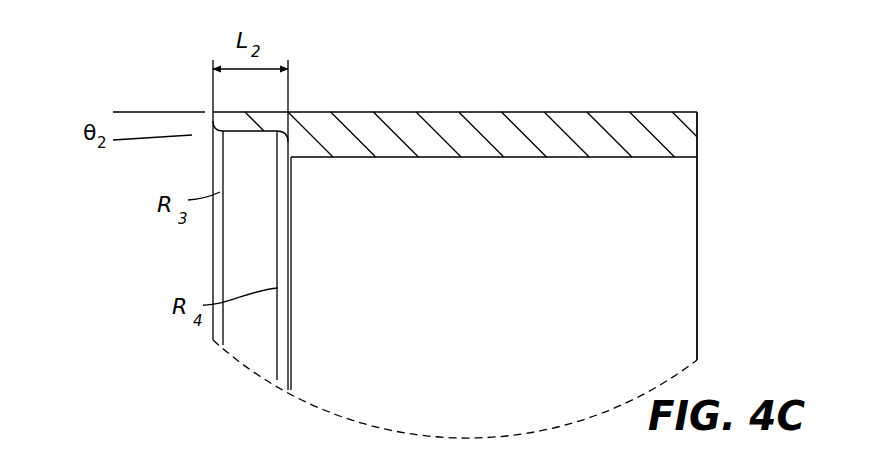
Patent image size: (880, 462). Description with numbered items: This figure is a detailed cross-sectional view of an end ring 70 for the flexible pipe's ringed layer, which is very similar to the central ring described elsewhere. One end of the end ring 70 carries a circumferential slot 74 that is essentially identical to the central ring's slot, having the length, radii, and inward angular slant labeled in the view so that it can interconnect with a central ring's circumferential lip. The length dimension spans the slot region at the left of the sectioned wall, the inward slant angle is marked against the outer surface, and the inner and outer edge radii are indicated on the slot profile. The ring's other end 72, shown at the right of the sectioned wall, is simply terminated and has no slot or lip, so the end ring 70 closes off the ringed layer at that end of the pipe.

The end ring 70 is at (487, 112).
The other end 72 is at (701, 109).
The circumferential slot 74 is at (207, 108).